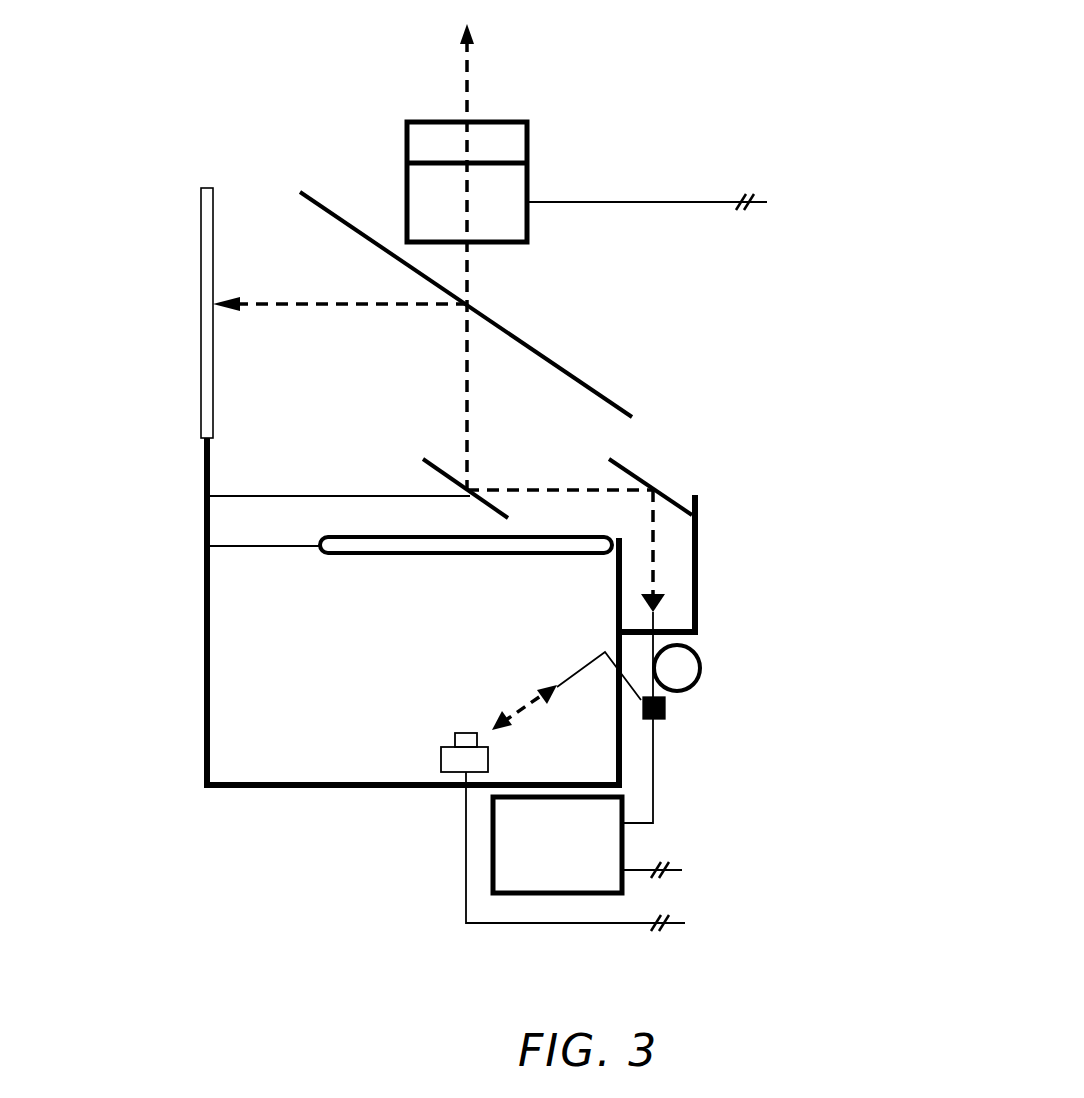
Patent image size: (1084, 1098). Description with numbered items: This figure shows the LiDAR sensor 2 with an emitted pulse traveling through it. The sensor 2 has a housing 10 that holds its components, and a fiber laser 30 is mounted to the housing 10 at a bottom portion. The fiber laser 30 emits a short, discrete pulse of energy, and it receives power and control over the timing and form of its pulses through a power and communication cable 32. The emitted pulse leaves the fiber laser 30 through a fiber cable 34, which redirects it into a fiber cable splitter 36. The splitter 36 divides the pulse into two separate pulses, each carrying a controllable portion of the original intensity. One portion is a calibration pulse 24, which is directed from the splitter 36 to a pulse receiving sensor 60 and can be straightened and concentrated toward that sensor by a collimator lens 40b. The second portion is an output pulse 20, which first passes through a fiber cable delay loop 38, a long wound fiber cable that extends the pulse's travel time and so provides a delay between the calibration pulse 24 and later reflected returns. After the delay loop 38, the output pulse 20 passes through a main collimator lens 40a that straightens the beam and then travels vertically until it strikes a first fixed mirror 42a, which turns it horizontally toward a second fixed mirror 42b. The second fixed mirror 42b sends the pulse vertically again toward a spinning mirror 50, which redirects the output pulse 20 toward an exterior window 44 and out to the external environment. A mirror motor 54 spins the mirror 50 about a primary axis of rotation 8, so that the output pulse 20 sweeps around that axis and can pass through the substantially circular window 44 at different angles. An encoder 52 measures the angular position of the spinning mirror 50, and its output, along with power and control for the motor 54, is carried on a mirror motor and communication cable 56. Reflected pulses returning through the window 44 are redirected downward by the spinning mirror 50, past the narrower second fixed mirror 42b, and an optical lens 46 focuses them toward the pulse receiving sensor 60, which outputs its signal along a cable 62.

The sensor 2 is at (142, 229).
The primary axis of rotation 8 is at (467, 88).
The housing 10 is at (205, 642).
The output pulse 20 is at (530, 488).
The calibration pulse 24 is at (527, 715).
The fiber laser 30 is at (493, 850).
The power and communication cable 32 is at (685, 881).
The fiber cable 34 is at (656, 795).
The fiber cable splitter 36 is at (665, 710).
The fiber cable delay loop 38 is at (700, 660).
The main collimator lens 40a is at (656, 595).
The collimator lens 40b is at (566, 653).
The first fixed mirror 42a is at (666, 479).
The second fixed mirror 42b is at (481, 516).
The exterior window 44 is at (208, 188).
The optical lens 46 is at (338, 556).
The spinning mirror 50 is at (316, 163).
The encoder 52 is at (476, 116).
The mirror motor 54 is at (531, 178).
The mirror motor and communication cable 56 is at (765, 174).
The pulse receiving sensor 60 is at (432, 746).
The cable 62 is at (441, 923).